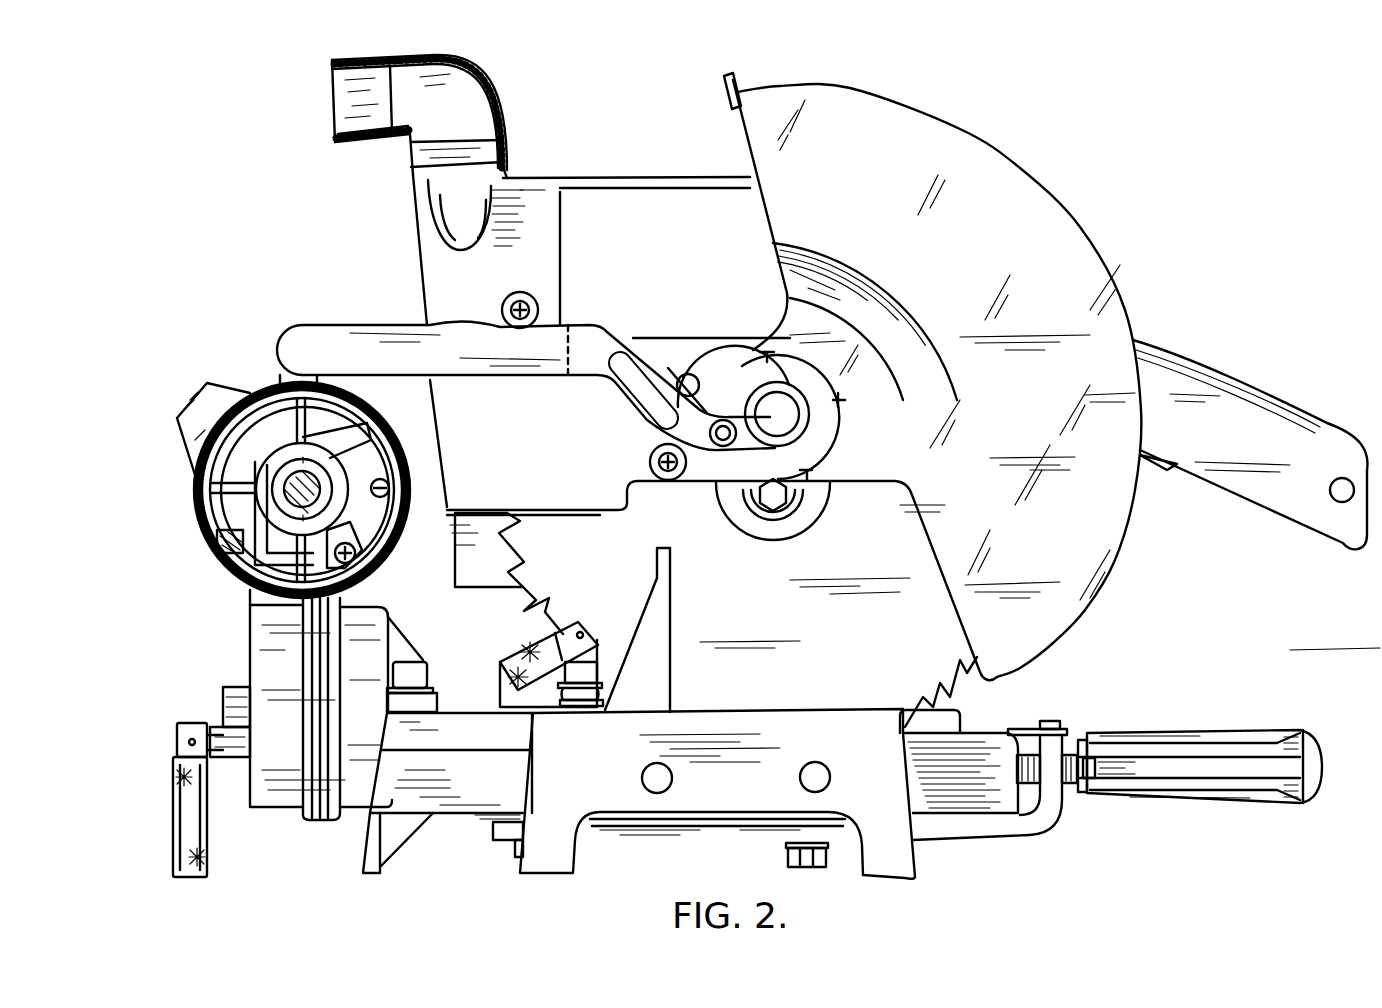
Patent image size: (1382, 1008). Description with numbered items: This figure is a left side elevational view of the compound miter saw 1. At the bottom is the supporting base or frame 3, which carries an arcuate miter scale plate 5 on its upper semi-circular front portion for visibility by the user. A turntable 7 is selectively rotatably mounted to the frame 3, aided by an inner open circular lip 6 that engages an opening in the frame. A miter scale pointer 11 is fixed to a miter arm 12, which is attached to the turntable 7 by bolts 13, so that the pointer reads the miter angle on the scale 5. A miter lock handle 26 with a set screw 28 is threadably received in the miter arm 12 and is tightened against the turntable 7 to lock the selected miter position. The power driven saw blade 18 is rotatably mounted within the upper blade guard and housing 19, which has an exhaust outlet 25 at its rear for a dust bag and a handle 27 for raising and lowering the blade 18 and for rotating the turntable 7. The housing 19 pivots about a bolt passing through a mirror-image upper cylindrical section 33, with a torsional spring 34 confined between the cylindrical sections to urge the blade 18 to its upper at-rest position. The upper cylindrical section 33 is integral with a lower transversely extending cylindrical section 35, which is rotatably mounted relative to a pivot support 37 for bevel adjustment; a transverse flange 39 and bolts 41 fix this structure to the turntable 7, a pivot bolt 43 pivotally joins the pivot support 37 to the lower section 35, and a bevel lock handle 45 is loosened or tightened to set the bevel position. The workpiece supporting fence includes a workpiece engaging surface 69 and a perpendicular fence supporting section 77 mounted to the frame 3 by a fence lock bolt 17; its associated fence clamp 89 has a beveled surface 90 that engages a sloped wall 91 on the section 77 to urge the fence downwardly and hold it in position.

The compound miter saw 1 is at (1163, 150).
The supporting base or frame 3 is at (903, 858).
The arcuate miter scale plate 5 is at (993, 717).
The inner open circular lip 6 is at (671, 668).
The turntable 7 is at (512, 737).
The miter scale pointer 11 is at (1030, 737).
The miter arm 12 is at (1012, 828).
The bolts 13 is at (818, 858).
The fence lock bolt 17 is at (522, 660).
The power driven saw blade 18 is at (945, 697).
The upper blade guard and housing 19 is at (716, 174).
The exhaust outlet 25 is at (345, 57).
The miter lock handle 26 is at (1226, 730).
The handle 27 is at (1240, 381).
The set screw 28 is at (1066, 805).
The upper cylindrical section 33 is at (385, 428).
The torsional spring 34 is at (365, 431).
The lower transversely extending cylindrical section 35 is at (288, 795).
The pivot support 37 is at (352, 805).
The transverse flange 39 is at (433, 710).
The bolts 41 is at (430, 672).
The pivot bolt 43 is at (225, 703).
The bevel lock handle 45 is at (180, 843).
The workpiece engaging surface 69 is at (672, 585).
The fence supporting section 77 is at (615, 704).
The fence clamp 89 is at (560, 690).
The beveled surface 90 is at (605, 690).
The sloped wall 91 is at (592, 707).